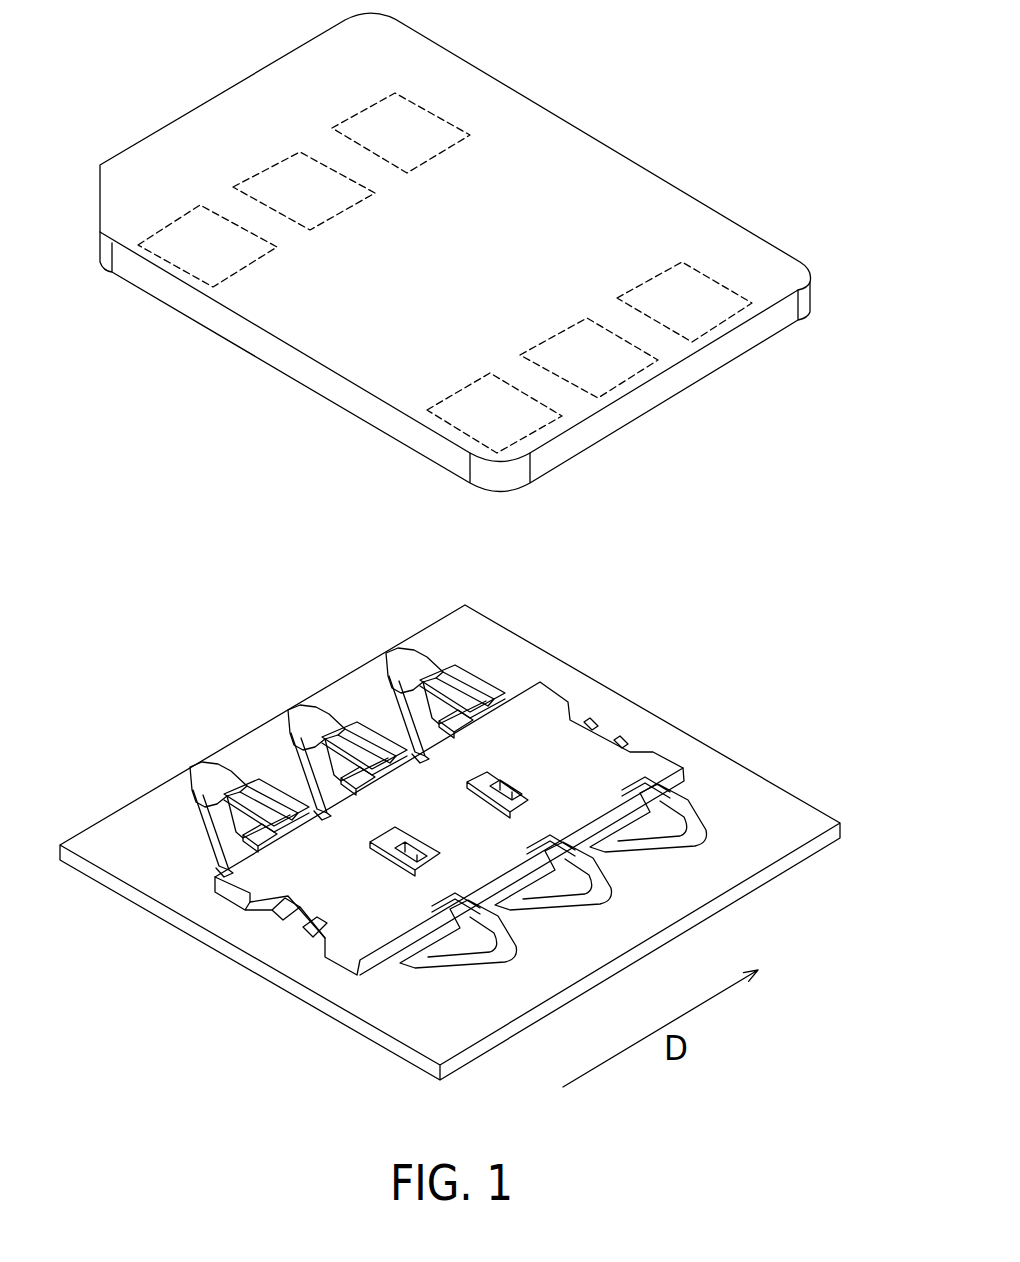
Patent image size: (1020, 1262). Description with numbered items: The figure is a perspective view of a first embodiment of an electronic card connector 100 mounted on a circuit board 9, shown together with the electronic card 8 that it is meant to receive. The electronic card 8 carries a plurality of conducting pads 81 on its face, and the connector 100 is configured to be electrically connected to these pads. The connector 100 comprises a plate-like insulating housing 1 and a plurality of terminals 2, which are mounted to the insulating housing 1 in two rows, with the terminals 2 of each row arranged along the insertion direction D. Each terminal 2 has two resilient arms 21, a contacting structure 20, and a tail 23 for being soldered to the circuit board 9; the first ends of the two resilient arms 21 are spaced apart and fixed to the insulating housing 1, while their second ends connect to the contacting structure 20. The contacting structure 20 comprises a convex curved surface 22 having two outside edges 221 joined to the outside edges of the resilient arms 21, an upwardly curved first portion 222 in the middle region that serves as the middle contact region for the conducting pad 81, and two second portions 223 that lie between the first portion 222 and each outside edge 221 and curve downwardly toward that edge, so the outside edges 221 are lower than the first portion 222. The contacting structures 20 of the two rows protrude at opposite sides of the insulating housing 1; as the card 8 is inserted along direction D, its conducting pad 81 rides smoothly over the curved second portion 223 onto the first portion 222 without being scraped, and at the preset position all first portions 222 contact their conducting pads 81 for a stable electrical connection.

The electronic card 8 is at (580, 125).
The conducting pads 81 is at (405, 118).
The circuit board 9 is at (770, 825).
The electronic card connector 100 is at (572, 694).
The insulating housing 1 is at (655, 766).
The terminals 2 is at (428, 655).
The contacting structure 20 is at (667, 845).
The resilient arms 21 is at (465, 683).
The convex curved surface 22 is at (397, 667).
The tail 23 is at (387, 708).
The outside edges 221 is at (210, 773).
The first portion 222 is at (207, 770).
The second portions 223 is at (238, 780).